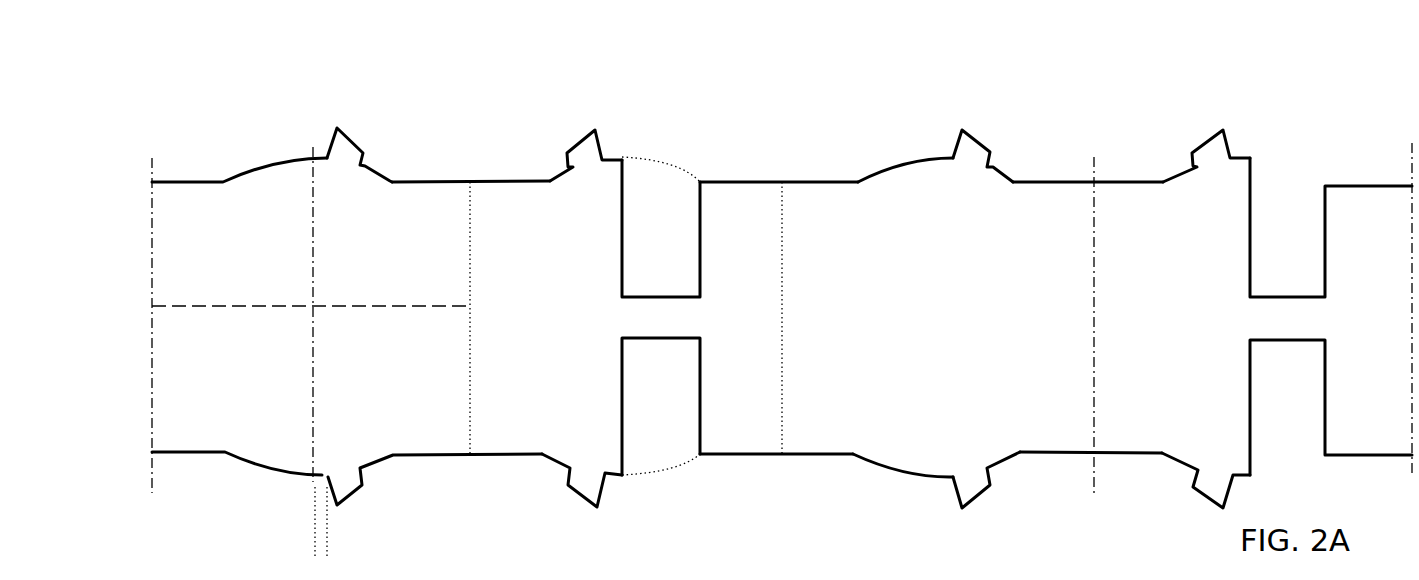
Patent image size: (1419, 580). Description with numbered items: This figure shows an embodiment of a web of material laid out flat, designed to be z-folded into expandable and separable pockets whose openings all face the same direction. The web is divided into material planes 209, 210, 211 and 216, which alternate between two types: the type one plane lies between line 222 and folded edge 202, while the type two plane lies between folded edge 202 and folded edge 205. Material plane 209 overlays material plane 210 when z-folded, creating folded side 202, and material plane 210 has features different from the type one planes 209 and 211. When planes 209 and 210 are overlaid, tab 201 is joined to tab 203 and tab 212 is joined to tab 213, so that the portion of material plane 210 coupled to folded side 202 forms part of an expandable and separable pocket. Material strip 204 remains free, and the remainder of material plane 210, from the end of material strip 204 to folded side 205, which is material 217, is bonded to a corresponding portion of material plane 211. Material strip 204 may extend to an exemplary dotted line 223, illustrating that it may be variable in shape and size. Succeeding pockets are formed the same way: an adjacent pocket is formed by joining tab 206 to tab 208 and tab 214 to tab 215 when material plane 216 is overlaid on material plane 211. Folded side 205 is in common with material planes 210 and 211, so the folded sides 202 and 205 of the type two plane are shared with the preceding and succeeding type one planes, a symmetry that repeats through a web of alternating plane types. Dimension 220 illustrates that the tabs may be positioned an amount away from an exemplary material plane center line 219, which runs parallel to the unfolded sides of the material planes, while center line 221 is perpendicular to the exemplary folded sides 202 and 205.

The tab 201 is at (342, 127).
The folded edge 202 is at (473, 175).
The tab 203 is at (582, 140).
The material strip 204 is at (658, 283).
The folded edge 205 is at (792, 177).
The tab 206 is at (982, 128).
The tab 208 is at (1215, 138).
The material plane 209 is at (387, 356).
The material plane 210 is at (562, 330).
The material plane 211 is at (962, 311).
The tab 212 is at (350, 487).
The tab 213 is at (588, 492).
The tab 214 is at (975, 493).
The tab 215 is at (1207, 497).
The material plane 216 is at (1204, 311).
The material 217 is at (748, 578).
The material plane center line 219 is at (313, 257).
The dimension 220 is at (360, 532).
The center line 221 is at (420, 303).
The line 222 is at (158, 222).
The dotted line 223 is at (651, 152).